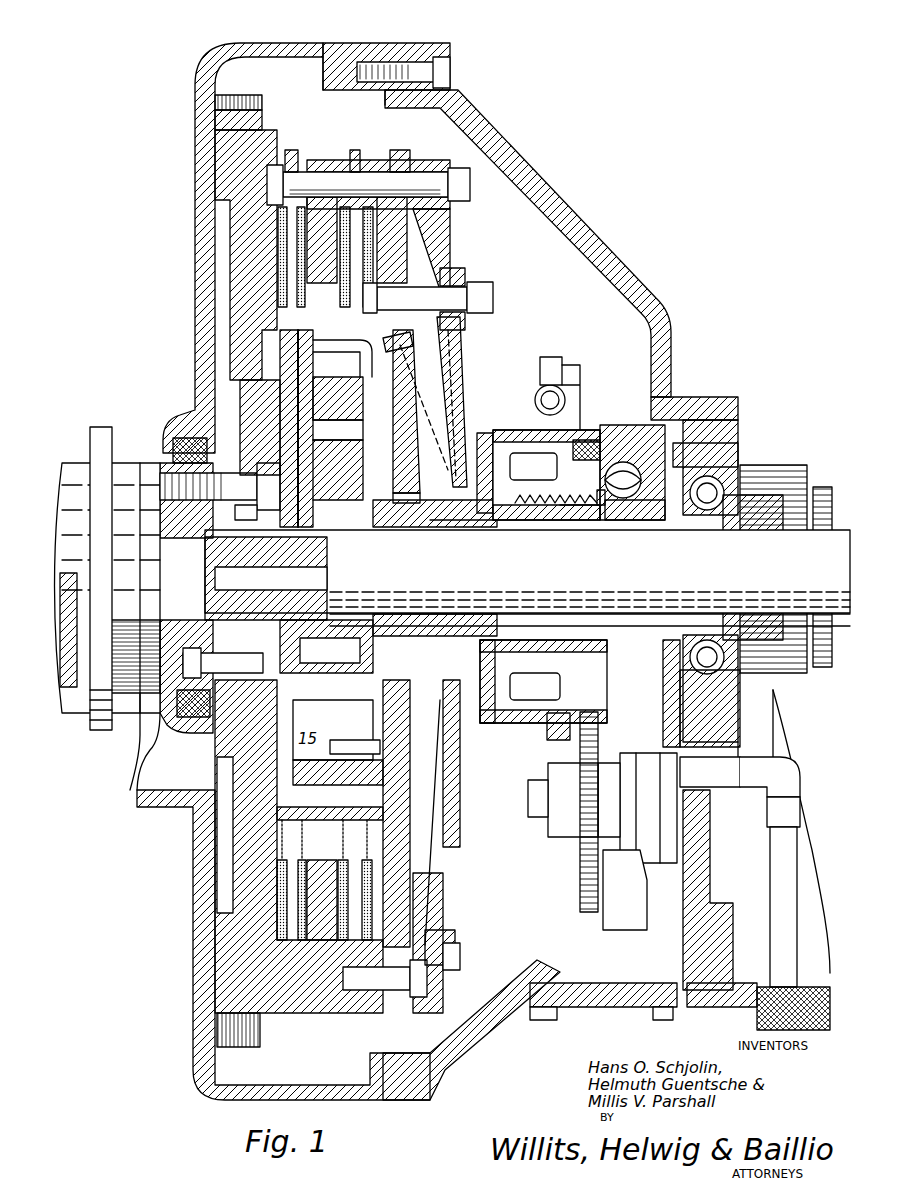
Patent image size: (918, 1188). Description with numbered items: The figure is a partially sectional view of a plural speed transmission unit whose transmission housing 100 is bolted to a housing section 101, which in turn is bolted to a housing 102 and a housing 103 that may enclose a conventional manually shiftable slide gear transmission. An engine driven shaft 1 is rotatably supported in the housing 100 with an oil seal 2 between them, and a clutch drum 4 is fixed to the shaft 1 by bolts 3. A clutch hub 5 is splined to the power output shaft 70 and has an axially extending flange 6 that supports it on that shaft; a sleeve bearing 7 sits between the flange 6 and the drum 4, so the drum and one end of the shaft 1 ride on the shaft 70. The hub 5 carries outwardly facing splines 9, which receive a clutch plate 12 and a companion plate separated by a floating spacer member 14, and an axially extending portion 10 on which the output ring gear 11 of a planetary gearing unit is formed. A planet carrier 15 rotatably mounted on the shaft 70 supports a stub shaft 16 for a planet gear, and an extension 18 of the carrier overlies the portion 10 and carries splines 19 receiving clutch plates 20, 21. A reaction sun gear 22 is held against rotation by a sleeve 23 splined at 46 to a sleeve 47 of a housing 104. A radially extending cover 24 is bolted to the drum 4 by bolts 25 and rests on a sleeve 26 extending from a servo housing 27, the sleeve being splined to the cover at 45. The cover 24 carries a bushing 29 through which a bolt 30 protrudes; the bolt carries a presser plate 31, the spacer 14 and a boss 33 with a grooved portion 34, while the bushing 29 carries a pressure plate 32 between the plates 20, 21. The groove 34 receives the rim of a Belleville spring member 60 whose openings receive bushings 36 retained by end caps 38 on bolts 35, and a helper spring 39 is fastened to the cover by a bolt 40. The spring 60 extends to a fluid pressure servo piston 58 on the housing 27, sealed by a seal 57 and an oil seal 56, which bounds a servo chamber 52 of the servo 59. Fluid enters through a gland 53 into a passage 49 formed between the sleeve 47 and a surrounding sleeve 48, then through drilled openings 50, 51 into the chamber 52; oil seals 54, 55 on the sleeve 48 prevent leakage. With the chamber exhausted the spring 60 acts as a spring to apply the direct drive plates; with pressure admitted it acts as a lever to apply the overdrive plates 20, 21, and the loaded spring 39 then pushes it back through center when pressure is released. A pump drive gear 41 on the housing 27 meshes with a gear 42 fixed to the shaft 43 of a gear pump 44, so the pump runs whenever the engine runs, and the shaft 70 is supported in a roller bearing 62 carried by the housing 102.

The engine driven shaft 1 is at (120, 690).
The oil seal 2 is at (173, 450).
The bolts 3 is at (185, 500).
The clutch drum 4 is at (232, 150).
The clutch hub 5 is at (262, 380).
The axially extending flange 6 is at (232, 520).
The sleeve bearing 7 is at (320, 395).
The outwardly facing splines 9 is at (280, 340).
The axially extending portion 10 is at (345, 352).
The output ring gear 11 is at (332, 747).
The clutch plate 12 is at (290, 330).
The floating spacer member 14 is at (283, 270).
The planet carrier 15 is at (338, 378).
The stub shaft 16 is at (398, 486).
The extension 18 is at (415, 400).
The splines 19 is at (367, 330).
The clutch plate 20 is at (343, 330).
The clutch plate 21 is at (430, 300).
The reaction sun gear 22 is at (360, 648).
The sleeve 23 is at (430, 527).
The radially extending cover 24 is at (395, 705).
The bolts 25 is at (410, 990).
The sleeve 26 is at (452, 540).
The servo housing 27 is at (565, 442).
The bushing 29 is at (385, 160).
The bolt 30 is at (410, 180).
The presser plate 31 is at (305, 160).
The pressure plate 32 is at (353, 160).
The boss 33 is at (450, 250).
The grooved portion 34 is at (460, 950).
The bolts 35 is at (493, 297).
The bushings 36 is at (467, 322).
The end cap 38 is at (468, 275).
The helper spring 39 is at (420, 470).
The bolt 40 is at (413, 348).
The pump drive gear 41 is at (615, 440).
The gear 42 is at (580, 875).
The shaft 43 is at (528, 800).
The gear pump 44 is at (650, 755).
The spline 45 is at (425, 640).
The spline 46 is at (640, 527).
The sleeve 47 is at (568, 520).
The sleeve 48 is at (663, 700).
The passage 49 is at (598, 520).
The drilled opening 50 is at (540, 513).
The drilled opening 51 is at (542, 480).
The servo chamber 52 is at (542, 410).
The gland 53 is at (615, 478).
The oil seal 54 is at (543, 681).
The oil seal 55 is at (535, 686).
The oil seal 56 is at (500, 440).
The seal 57 is at (486, 520).
The servo piston 58 is at (485, 433).
The servo 59 is at (548, 740).
The Belleville spring member 60 is at (462, 378).
The roller bearing 62 is at (707, 510).
The power output shaft 70 is at (208, 597).
The transmission housing 100 is at (195, 112).
The housing section 101 is at (553, 190).
The housing 102 is at (738, 445).
The housing 103 is at (738, 410).
The housing 104 is at (600, 450).